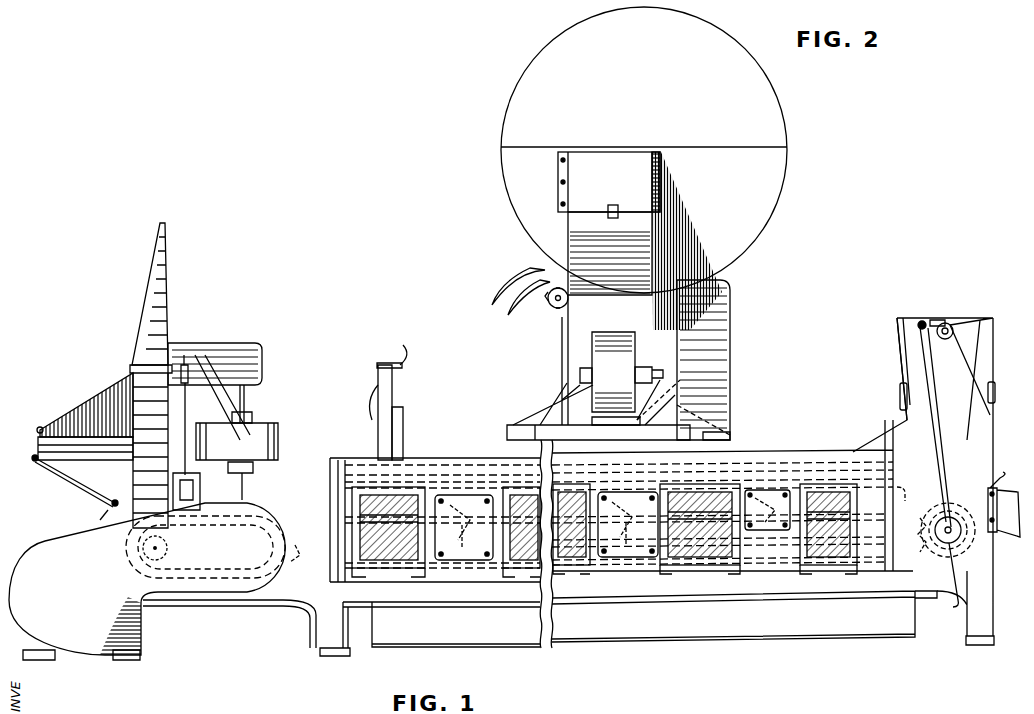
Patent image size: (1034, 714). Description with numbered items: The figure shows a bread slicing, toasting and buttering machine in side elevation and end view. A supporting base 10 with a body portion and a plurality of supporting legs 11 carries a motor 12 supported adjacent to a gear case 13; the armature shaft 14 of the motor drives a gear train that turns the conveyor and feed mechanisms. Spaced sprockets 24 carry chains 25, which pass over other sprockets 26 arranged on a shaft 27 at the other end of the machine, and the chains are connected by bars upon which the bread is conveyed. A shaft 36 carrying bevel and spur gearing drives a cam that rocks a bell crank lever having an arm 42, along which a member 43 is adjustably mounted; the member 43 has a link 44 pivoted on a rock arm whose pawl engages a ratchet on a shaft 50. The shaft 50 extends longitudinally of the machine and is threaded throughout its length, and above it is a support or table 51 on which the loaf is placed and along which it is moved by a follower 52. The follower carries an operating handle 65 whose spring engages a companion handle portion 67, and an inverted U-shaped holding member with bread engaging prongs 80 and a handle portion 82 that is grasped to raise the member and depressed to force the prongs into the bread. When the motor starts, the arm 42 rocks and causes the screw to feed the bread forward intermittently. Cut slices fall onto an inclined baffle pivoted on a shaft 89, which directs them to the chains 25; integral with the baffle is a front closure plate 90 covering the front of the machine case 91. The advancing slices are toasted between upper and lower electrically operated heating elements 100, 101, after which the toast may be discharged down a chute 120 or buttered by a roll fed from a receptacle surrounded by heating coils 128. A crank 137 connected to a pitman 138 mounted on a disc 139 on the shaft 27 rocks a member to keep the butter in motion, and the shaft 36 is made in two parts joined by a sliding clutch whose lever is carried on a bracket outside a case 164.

In FIG. 1, the supporting base 10 is at (296, 603).
In FIG. 2, the supporting base 10 is at (560, 378).
In FIG. 1, the supporting legs 11 is at (330, 627).
In FIG. 2, the supporting legs 11 is at (548, 405).
In FIG. 2, the motor 12 is at (604, 344).
In FIG. 1, the gear case 13 is at (58, 546).
In FIG. 2, the gear case 13 is at (722, 330).
In FIG. 2, the armature shaft 14 is at (660, 368).
In FIG. 1, the spaced sprockets 24 is at (186, 549).
In FIG. 1, the chains 25 is at (200, 580).
In FIG. 1, the sprockets 26 is at (924, 511).
In FIG. 1, the shaft 27 is at (944, 581).
In FIG. 1, the shaft 36 is at (250, 400).
In FIG. 1, the arm 42 is at (150, 382).
In FIG. 1, the member 43 is at (188, 380).
In FIG. 1, the link 44 is at (100, 485).
In FIG. 1, the shaft 50 is at (448, 470).
In FIG. 1, the support or table 51 is at (770, 466).
In FIG. 1, the follower 52 is at (380, 433).
In FIG. 2, the operating handle 65 is at (500, 276).
In FIG. 2, the companion handle portion 67 is at (540, 304).
In FIG. 1, the bread engaging prongs 80 is at (376, 398).
In FIG. 1, the handle portion 82 is at (402, 347).
In FIG. 1, the shaft 89 is at (108, 509).
In FIG. 1, the front closure plate 90 is at (62, 468).
In FIG. 2, the front closure plate 90 is at (572, 245).
In FIG. 1, the machine case 91 is at (75, 413).
In FIG. 2, the machine case 91 is at (570, 172).
In FIG. 1, the upper heating element 100 is at (898, 484).
In FIG. 1, the lower heating element 101 is at (252, 533).
In FIG. 1, the chute 120 is at (1005, 488).
In FIG. 1, the heating coils 128 is at (895, 393).
In FIG. 1, the crank 137 is at (928, 318).
In FIG. 1, the pitman 138 is at (905, 352).
In FIG. 1, the disc 139 is at (962, 538).
In FIG. 1, the case 164 is at (268, 424).